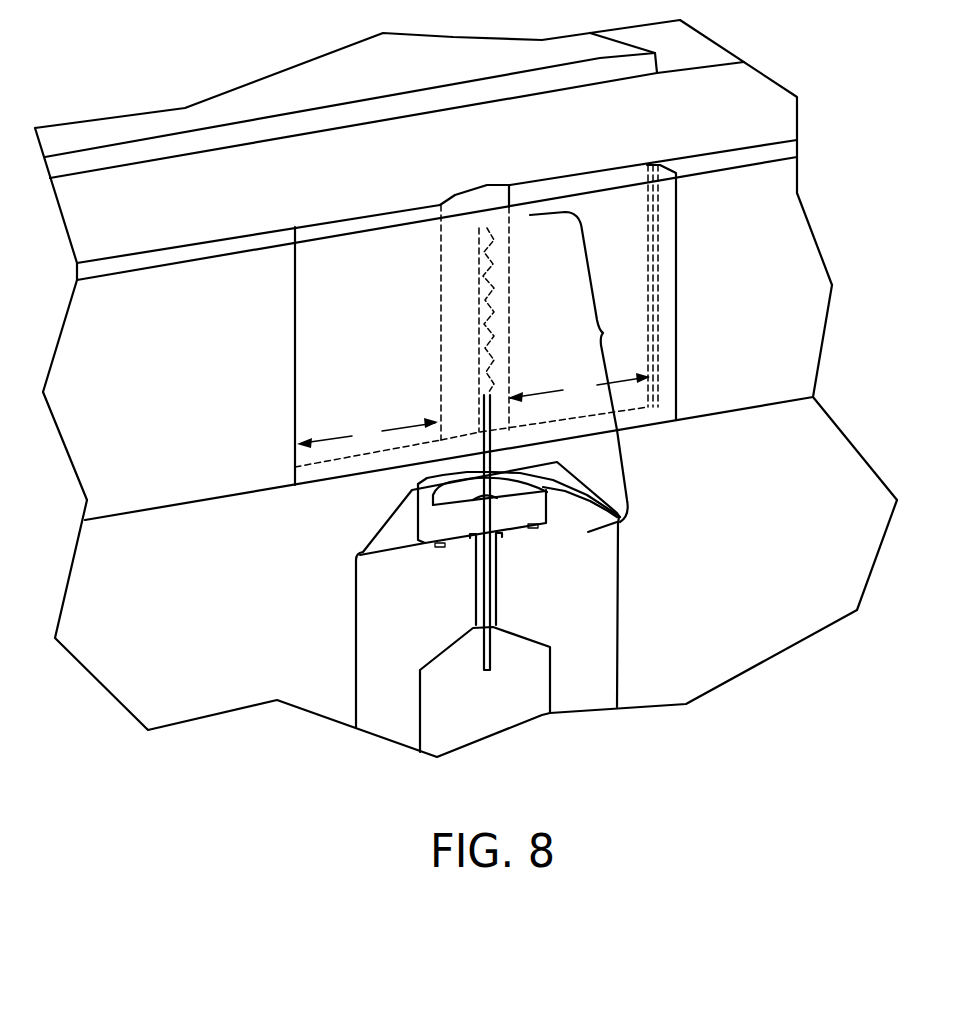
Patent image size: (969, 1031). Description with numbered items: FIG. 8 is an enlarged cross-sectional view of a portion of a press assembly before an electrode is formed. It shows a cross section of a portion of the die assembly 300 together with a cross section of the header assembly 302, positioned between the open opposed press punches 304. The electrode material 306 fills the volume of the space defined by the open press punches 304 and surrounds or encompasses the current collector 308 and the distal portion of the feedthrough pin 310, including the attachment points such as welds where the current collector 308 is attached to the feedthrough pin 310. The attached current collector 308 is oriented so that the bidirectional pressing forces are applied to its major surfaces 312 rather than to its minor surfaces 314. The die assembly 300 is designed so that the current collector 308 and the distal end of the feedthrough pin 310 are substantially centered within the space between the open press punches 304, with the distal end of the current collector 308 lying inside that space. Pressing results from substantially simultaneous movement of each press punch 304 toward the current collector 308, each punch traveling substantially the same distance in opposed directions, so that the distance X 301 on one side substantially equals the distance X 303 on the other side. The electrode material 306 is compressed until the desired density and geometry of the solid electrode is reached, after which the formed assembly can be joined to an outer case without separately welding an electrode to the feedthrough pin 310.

The die assembly 300 is at (703, 564).
The distance X 301 is at (335, 442).
The header assembly 302 is at (587, 367).
The distance X 303 is at (620, 380).
The press punches 304 is at (170, 419).
The electrode material 306 is at (318, 222).
The current collector 308 is at (484, 222).
The feedthrough pin 310 is at (478, 564).
The major surfaces 312 is at (483, 365).
The minor surfaces 314 is at (493, 283).